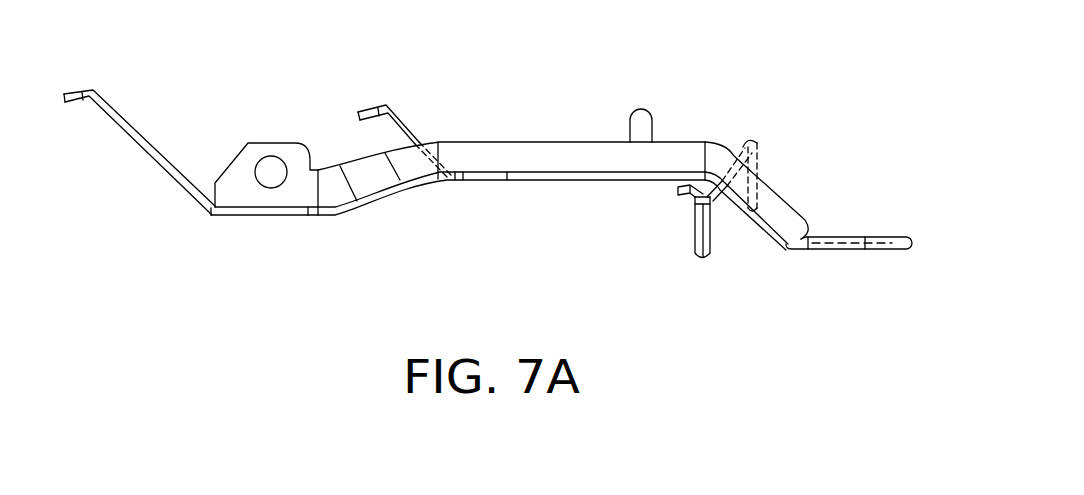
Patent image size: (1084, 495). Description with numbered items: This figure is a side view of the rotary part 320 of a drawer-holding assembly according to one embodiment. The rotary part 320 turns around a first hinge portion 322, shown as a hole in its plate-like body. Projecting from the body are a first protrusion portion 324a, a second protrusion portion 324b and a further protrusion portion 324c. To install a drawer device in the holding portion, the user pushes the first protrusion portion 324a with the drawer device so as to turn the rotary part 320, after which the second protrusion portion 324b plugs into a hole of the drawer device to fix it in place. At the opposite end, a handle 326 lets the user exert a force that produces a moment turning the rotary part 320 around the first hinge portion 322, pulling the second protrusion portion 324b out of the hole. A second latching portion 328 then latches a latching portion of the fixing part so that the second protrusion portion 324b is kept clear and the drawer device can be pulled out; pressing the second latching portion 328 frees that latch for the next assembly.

The rotary part 320 is at (742, 367).
The first hinge portion 322 is at (272, 170).
The first protrusion portion 324a is at (130, 122).
The second protrusion portion 324b is at (639, 118).
The third bent tab 324c is at (402, 120).
The handle 326 is at (910, 238).
The second latching portion 328 is at (690, 195).